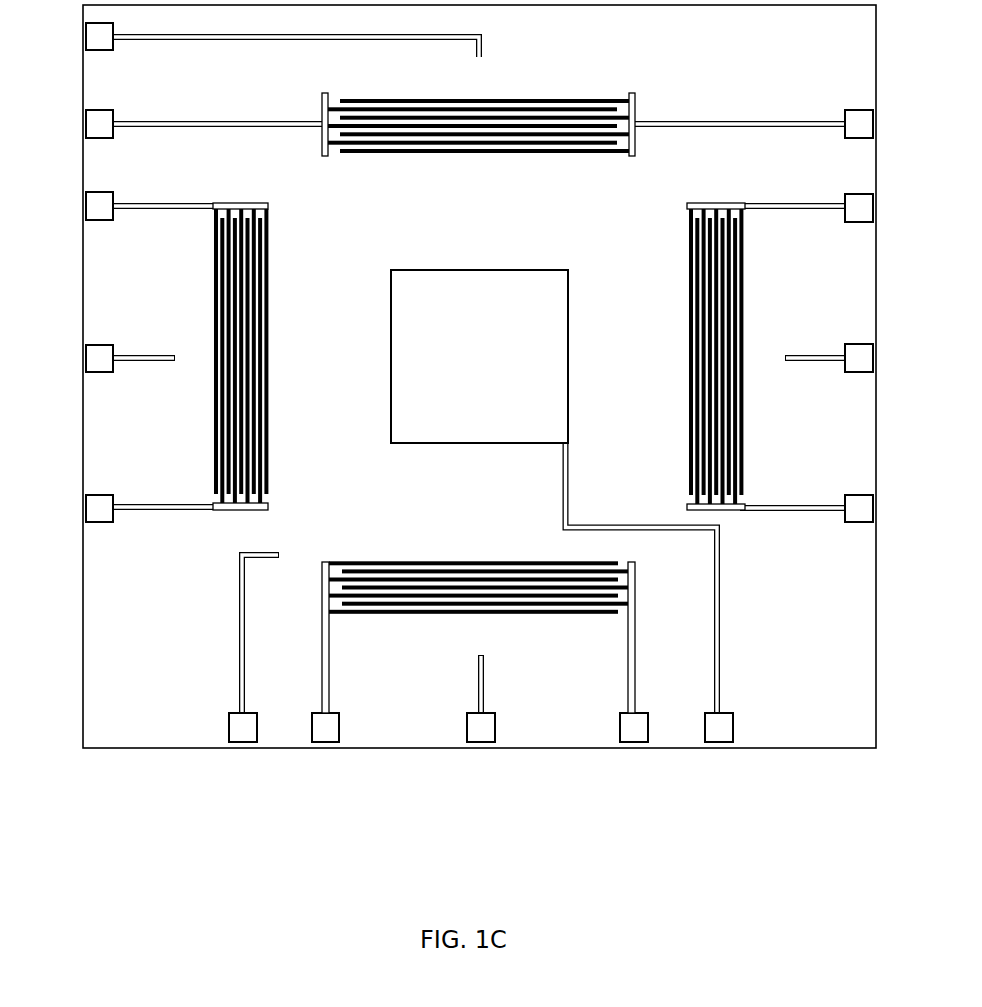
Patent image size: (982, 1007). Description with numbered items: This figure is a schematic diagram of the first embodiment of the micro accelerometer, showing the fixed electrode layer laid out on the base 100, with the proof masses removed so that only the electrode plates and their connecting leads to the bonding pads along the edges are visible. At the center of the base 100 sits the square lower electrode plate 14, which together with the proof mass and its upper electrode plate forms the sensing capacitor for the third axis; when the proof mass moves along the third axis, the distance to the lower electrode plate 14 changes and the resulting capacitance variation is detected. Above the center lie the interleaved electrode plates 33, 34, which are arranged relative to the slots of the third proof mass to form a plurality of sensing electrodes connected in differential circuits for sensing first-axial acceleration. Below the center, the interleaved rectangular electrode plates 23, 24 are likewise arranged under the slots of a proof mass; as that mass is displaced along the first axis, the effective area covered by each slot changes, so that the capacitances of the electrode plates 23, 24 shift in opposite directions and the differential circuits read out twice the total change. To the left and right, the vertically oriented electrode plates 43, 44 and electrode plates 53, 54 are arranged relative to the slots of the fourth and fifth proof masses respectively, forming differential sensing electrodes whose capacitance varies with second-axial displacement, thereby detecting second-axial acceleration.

The base 100 is at (390, 749).
The lower electrode plate 14 is at (513, 270).
The electrode plate 33 is at (538, 97).
The electrode plate 34 is at (436, 157).
The rectangular electrode plate 23 is at (522, 561).
The rectangular electrode plate 24 is at (420, 614).
The electrode plate 43 is at (270, 400).
The electrode plate 44 is at (212, 300).
The electrode plate 53 is at (744, 415).
The electrode plate 54 is at (689, 318).